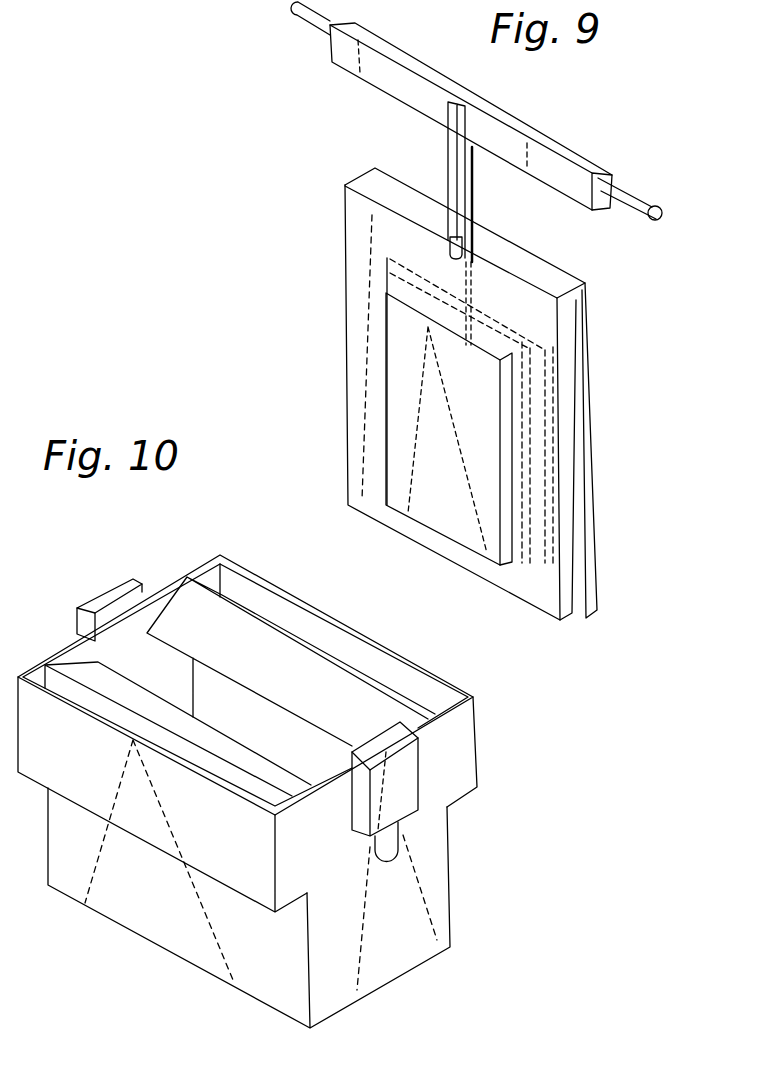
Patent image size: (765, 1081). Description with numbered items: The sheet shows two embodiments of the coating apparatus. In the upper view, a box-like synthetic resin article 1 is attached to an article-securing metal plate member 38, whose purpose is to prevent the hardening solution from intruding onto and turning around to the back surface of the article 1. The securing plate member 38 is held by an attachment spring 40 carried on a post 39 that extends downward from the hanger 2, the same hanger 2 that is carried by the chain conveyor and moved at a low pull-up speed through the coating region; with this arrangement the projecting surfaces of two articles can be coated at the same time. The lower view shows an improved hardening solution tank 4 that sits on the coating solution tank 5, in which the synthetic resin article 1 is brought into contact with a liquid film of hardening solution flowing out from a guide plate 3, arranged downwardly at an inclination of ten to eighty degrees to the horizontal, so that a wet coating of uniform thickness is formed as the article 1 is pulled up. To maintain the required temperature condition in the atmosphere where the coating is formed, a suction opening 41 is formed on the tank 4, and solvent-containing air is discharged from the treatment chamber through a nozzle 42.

In FIG. 9, the synthetic resin article 1 is at (392, 424).
In FIG. 9, the hanger 2 is at (577, 157).
In FIG. 10, the guide plate 3 is at (175, 602).
In FIG. 10, the hardening solution tank 4 is at (322, 610).
In FIG. 10, the coating solution tank 5 is at (423, 952).
In FIG. 9, the article-securing metal plate member 38 is at (348, 247).
In FIG. 9, the post 39 is at (452, 165).
In FIG. 9, the attachment spring 40 is at (450, 248).
In FIG. 10, the suction opening 41 is at (417, 768).
In FIG. 10, the nozzle 42 is at (388, 857).